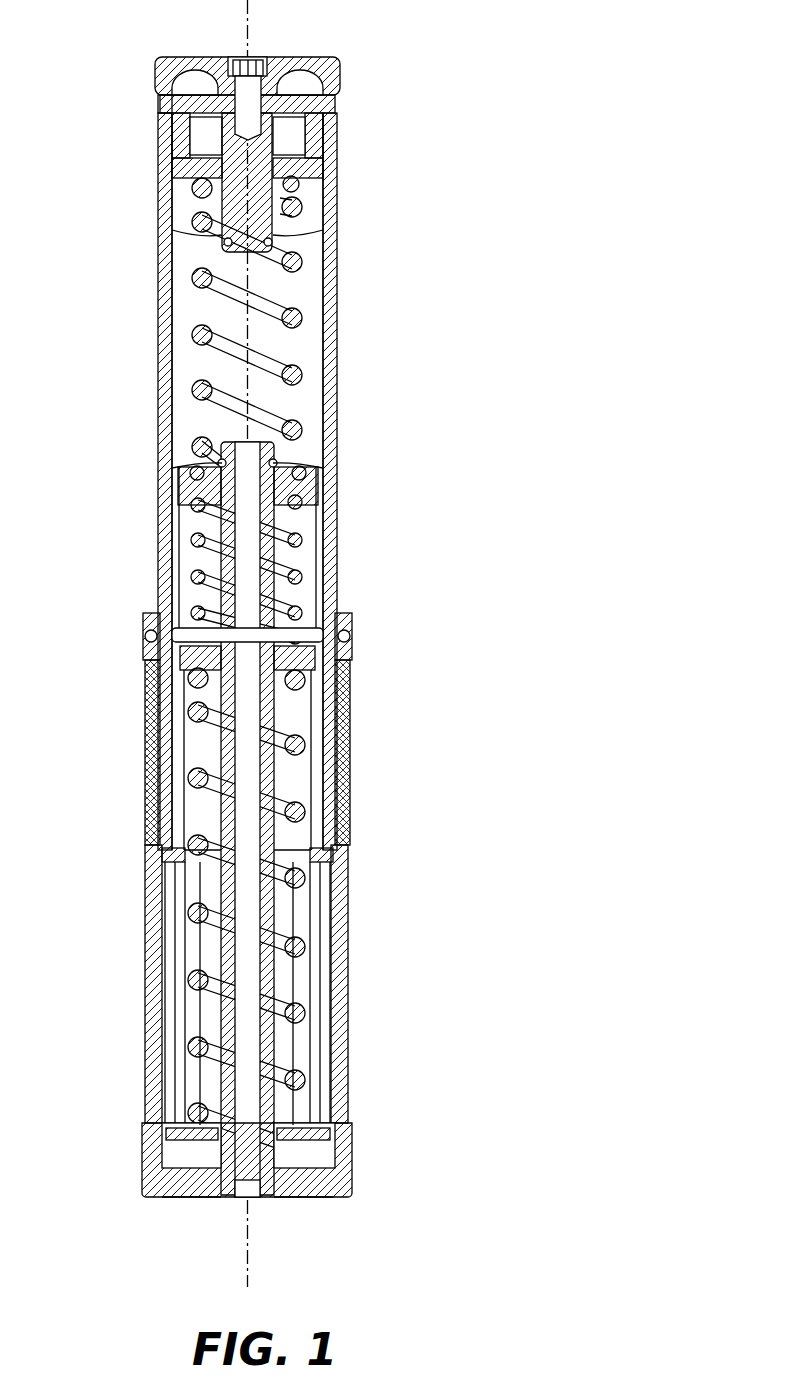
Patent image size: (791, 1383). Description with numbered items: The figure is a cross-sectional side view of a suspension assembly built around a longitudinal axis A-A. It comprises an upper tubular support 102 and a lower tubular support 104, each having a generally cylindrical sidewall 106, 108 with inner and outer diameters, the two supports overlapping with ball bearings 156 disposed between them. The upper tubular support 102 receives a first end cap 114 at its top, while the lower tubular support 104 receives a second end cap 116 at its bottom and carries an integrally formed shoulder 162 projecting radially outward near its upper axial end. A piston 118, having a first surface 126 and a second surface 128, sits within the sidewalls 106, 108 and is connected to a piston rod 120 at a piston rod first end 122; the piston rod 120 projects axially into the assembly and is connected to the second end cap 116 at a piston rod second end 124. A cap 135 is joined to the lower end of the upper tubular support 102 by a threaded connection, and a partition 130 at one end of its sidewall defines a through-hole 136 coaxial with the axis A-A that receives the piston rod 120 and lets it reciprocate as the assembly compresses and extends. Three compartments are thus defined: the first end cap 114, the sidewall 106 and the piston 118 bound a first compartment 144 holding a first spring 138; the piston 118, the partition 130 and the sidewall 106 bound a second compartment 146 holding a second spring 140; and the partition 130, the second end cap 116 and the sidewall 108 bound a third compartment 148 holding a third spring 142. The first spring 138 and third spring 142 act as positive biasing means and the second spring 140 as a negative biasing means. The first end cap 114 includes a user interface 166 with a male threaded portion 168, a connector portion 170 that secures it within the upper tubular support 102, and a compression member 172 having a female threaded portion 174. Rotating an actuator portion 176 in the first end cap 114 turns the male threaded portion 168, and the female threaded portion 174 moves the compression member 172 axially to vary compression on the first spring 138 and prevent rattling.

The upper tubular support 102 is at (348, 388).
The lower tubular support 104 is at (364, 936).
The sidewall 106 is at (160, 345).
The sidewall 108 is at (160, 855).
The first end cap 114 is at (348, 74).
The second end cap 116 is at (160, 1187).
The piston 118 is at (324, 497).
The piston rod 120 is at (300, 607).
The piston rod first end 122 is at (285, 460).
The piston rod second end 124 is at (300, 1187).
The first surface 126 is at (183, 470).
The second surface 128 is at (186, 520).
The partition 130 is at (314, 657).
The cap 135 is at (182, 700).
The through-hole 136 is at (330, 650).
The first spring 138 is at (182, 396).
The second spring 140 is at (190, 565).
The third spring 142 is at (200, 985).
The first compartment 144 is at (318, 295).
The second compartment 146 is at (312, 560).
The third compartment 148 is at (305, 975).
The ball bearings 156 is at (152, 752).
The integrally formed shoulder 162 is at (170, 645).
The user interface 166 is at (340, 104).
The male threaded portion 168 is at (318, 155).
The connector portion 170 is at (172, 107).
The compression member 172 is at (178, 190).
The female threaded portion 174 is at (172, 232).
The actuator portion 176 is at (255, 56).
The longitudinal axis A-A is at (247, 1245).